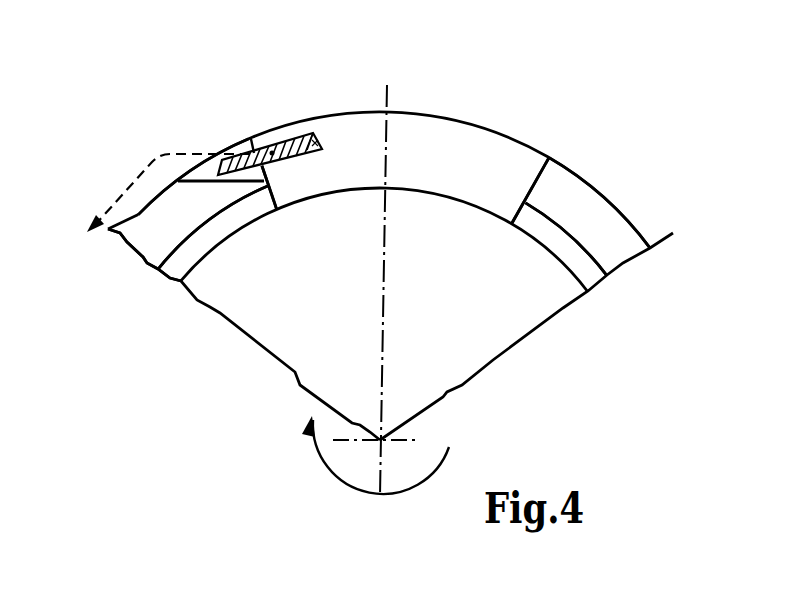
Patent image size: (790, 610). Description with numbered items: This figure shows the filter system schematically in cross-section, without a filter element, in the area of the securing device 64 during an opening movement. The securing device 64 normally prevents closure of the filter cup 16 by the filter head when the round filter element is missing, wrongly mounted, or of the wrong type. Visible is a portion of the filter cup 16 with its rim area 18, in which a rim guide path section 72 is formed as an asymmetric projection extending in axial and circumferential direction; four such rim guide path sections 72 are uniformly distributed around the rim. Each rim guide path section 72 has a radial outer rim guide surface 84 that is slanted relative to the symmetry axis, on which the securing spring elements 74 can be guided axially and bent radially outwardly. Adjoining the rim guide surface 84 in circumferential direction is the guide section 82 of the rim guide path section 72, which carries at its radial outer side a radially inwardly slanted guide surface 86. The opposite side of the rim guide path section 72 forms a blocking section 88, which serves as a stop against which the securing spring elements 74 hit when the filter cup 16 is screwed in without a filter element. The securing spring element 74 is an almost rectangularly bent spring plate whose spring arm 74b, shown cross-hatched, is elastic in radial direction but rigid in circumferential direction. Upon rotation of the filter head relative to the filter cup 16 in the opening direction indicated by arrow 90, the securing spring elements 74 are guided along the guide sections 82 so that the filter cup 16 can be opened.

The filter cup 16 is at (124, 258).
The rim area 18 is at (138, 272).
The securing device 64 is at (216, 142).
The rim guide path section 72 is at (217, 245).
The securing spring element 74 is at (280, 118).
The spring arm 74b is at (313, 135).
The guide section 82 is at (195, 176).
The rim guide surface 84 is at (162, 218).
The guide surface 86 is at (242, 148).
The blocking section 88 is at (522, 181).
The opening direction arrow 90 is at (326, 489).